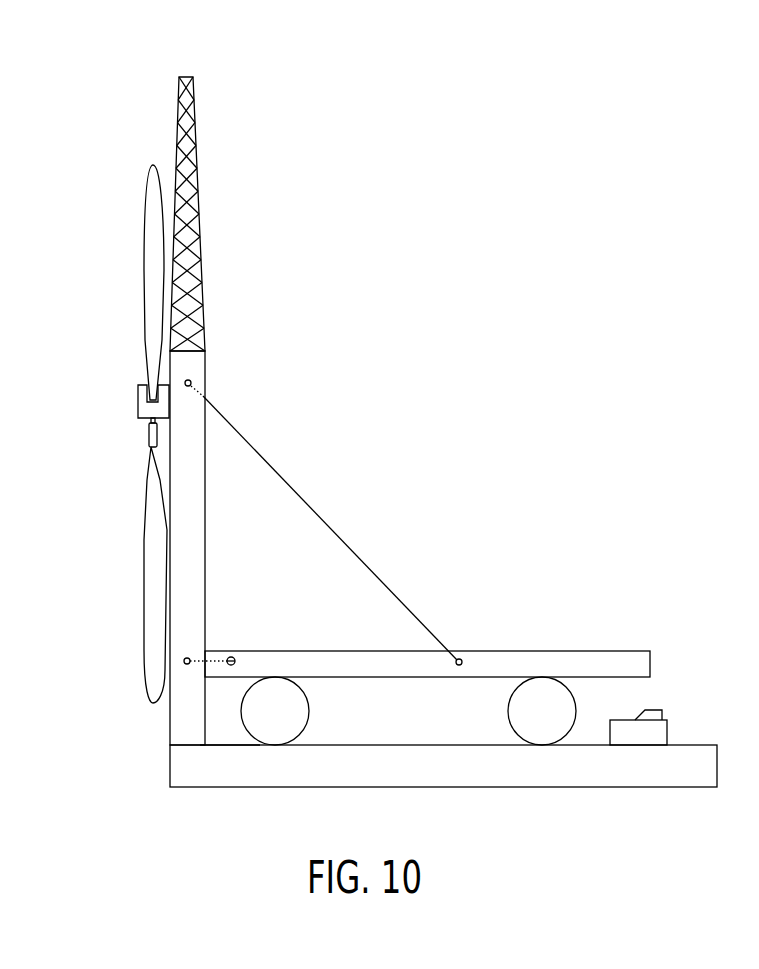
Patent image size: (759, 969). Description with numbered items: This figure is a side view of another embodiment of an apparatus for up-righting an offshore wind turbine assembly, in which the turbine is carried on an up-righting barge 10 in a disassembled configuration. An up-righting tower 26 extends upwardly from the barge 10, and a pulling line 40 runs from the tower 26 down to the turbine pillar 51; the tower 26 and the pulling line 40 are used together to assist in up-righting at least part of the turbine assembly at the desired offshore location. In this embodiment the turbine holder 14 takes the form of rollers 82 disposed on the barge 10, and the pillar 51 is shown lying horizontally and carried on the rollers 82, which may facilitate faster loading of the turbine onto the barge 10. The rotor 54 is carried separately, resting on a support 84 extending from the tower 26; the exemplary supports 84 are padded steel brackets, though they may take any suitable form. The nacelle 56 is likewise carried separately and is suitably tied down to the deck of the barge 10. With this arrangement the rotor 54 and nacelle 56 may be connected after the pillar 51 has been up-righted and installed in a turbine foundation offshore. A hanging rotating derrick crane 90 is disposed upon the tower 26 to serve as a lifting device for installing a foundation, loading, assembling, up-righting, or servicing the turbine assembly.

The up-righting barge 10 is at (443, 790).
The turbine holder 14 is at (305, 783).
The second up-righting tower 26 is at (316, 544).
The pulling line 40 is at (233, 657).
The pillar 51 is at (427, 636).
The rotor 54 is at (136, 434).
The nacelle 56 is at (666, 711).
The roller 82 is at (516, 688).
The support 84 is at (133, 399).
The hanging rotating derrick crane 90 is at (211, 214).